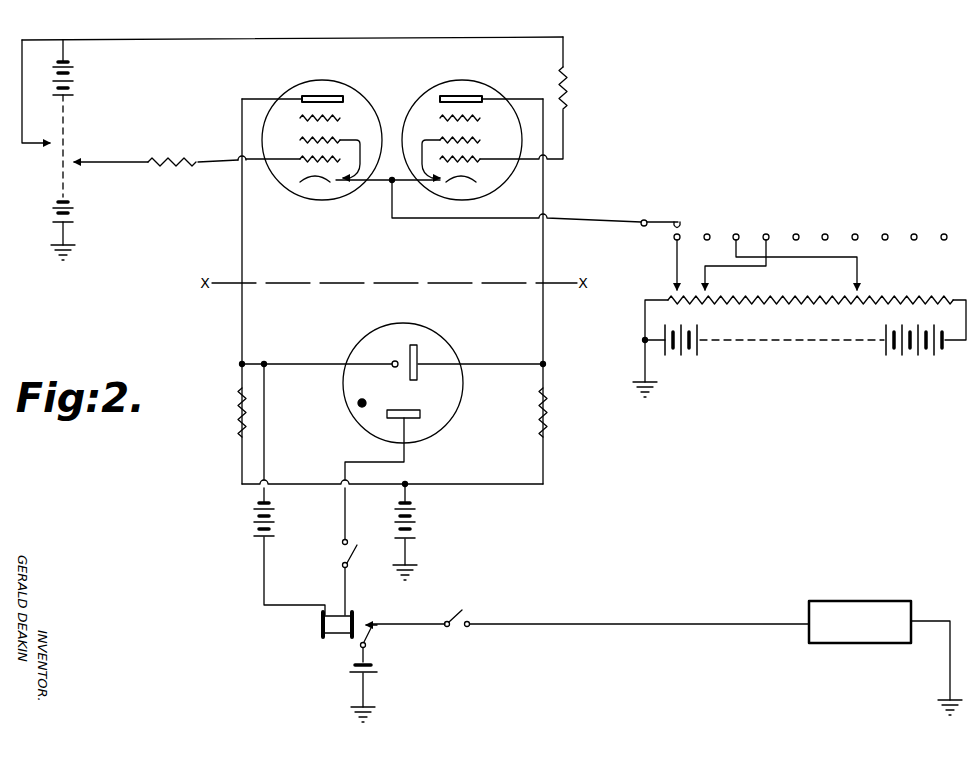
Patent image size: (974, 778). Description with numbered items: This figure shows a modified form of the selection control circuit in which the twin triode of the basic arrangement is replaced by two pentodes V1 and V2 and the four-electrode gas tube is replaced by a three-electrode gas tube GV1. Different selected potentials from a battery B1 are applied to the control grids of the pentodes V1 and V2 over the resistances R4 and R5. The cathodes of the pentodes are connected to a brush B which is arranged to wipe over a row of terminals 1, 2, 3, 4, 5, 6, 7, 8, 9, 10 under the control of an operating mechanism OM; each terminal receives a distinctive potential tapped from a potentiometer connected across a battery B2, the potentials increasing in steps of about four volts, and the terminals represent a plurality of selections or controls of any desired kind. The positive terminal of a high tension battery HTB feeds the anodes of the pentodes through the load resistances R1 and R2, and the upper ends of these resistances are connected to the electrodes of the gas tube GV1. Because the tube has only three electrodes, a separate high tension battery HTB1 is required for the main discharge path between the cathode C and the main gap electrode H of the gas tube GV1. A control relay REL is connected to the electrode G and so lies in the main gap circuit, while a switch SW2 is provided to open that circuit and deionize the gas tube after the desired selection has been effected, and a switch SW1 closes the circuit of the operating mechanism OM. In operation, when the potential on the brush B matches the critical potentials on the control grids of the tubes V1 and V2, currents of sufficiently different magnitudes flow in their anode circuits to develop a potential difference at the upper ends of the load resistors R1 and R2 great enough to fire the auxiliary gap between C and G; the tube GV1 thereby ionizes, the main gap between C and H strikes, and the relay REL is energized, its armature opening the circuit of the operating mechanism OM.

The battery B1 is at (79, 150).
The resistance R4 is at (160, 151).
The resistance R5 is at (577, 88).
The pentode V1 is at (322, 130).
The pentode V2 is at (462, 130).
The brush B is at (660, 214).
The terminal 1 is at (677, 248).
The terminal 2 is at (707, 223).
The terminal 3 is at (795, 248).
The terminal 4 is at (737, 248).
The terminal 5 is at (796, 223).
The terminal 6 is at (825, 223).
The terminal 7 is at (855, 223).
The terminal 8 is at (885, 223).
The terminal 9 is at (914, 223).
The terminal 10 is at (944, 223).
The battery B2 is at (799, 346).
The three-electrode gas tube GV1 is at (403, 370).
The cathode C is at (395, 360).
The main gap electrode G is at (417, 358).
The main gap electrode H is at (407, 420).
The load resistance R1 is at (228, 412).
The load resistance R2 is at (558, 412).
The separate high tension battery HTB1 is at (236, 522).
The high tension battery HTB is at (429, 520).
The switch SW2 is at (327, 554).
The control relay REL is at (324, 630).
The switch SW1 is at (457, 633).
The operating mechanism OM is at (860, 610).